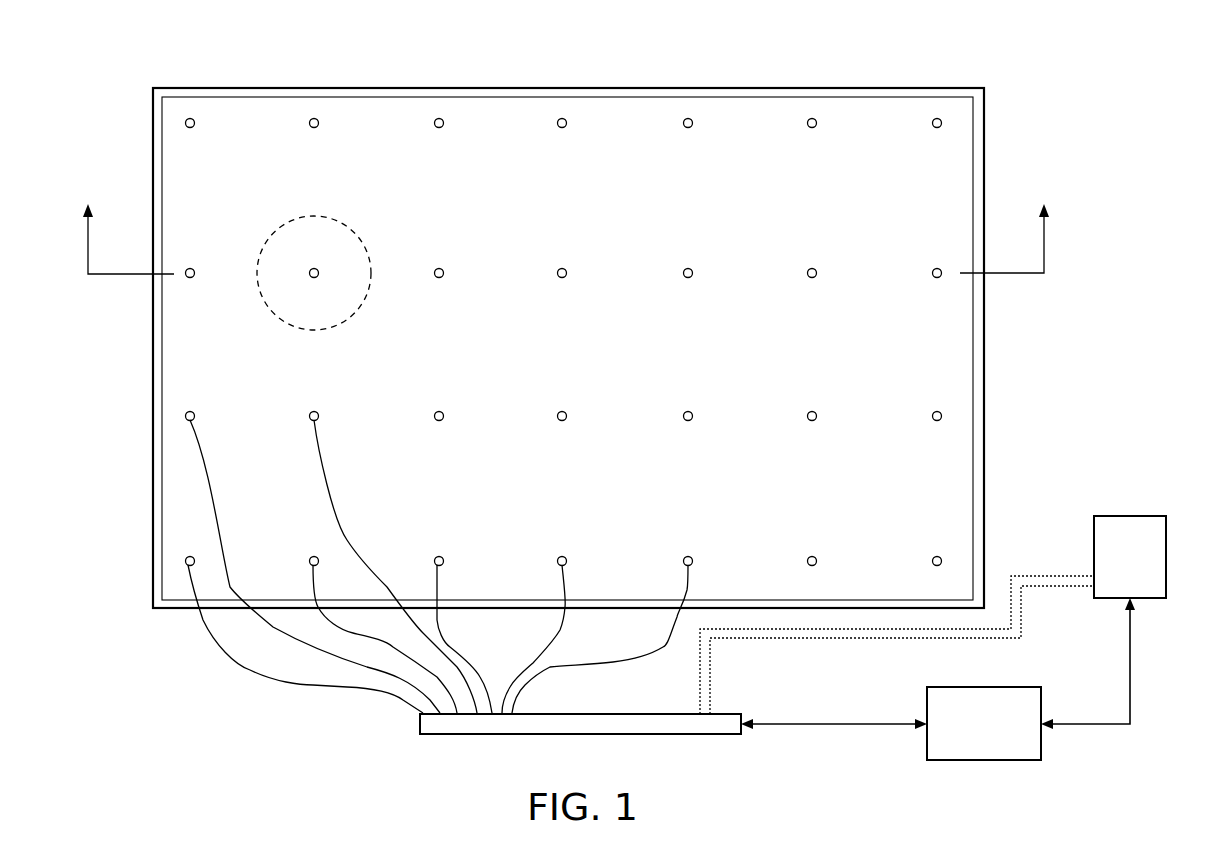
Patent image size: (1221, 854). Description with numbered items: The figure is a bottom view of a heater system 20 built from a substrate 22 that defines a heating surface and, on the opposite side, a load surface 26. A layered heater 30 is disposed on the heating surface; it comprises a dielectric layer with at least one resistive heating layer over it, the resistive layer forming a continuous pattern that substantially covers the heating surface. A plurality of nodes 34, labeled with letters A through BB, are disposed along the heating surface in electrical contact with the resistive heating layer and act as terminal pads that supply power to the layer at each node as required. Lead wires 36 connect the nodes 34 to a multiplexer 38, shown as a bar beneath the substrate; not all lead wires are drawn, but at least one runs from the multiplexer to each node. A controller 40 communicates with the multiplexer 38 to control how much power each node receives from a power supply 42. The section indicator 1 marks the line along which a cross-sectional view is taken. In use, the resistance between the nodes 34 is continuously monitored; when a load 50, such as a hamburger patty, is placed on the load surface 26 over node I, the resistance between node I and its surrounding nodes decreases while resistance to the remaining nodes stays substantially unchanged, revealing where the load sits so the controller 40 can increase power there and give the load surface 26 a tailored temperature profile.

The section line 1- 1 is at (570, 246).
The heater system 20 is at (974, 59).
The substrate 22 is at (986, 162).
The load surface 26 is at (244, 108).
The layered heater 30 is at (958, 494).
The nodes 34 is at (314, 118).
The lead wires 36 is at (277, 678).
The multiplexer 38 is at (452, 735).
The controller 40 is at (1020, 687).
The power supply 42 is at (1115, 516).
The load 50 is at (275, 253).